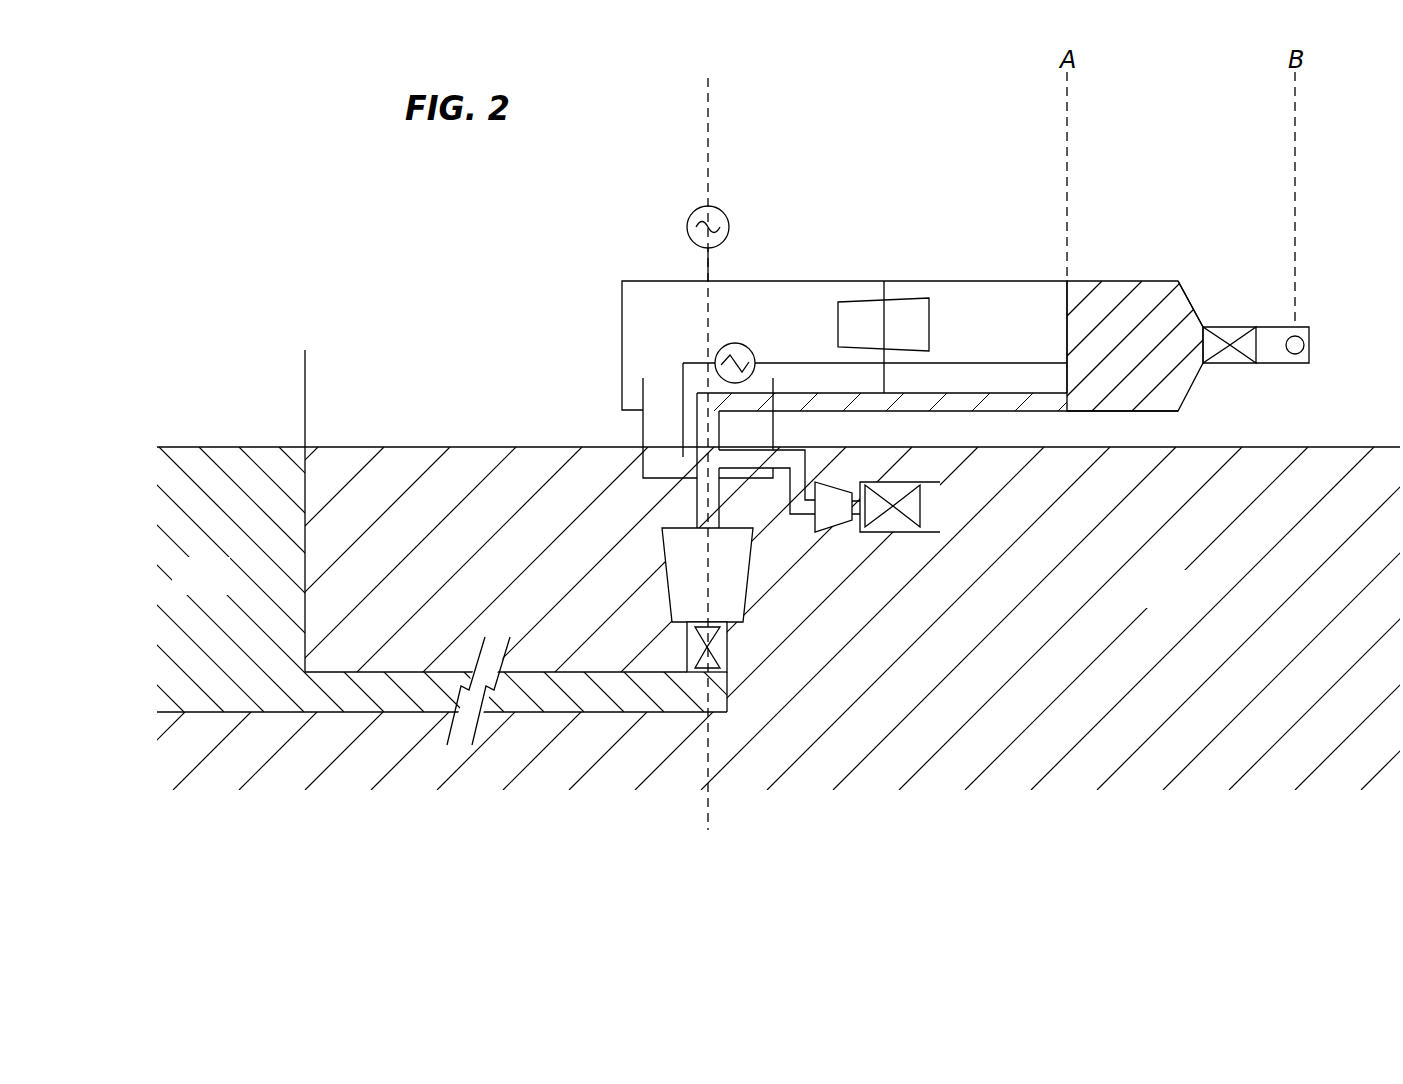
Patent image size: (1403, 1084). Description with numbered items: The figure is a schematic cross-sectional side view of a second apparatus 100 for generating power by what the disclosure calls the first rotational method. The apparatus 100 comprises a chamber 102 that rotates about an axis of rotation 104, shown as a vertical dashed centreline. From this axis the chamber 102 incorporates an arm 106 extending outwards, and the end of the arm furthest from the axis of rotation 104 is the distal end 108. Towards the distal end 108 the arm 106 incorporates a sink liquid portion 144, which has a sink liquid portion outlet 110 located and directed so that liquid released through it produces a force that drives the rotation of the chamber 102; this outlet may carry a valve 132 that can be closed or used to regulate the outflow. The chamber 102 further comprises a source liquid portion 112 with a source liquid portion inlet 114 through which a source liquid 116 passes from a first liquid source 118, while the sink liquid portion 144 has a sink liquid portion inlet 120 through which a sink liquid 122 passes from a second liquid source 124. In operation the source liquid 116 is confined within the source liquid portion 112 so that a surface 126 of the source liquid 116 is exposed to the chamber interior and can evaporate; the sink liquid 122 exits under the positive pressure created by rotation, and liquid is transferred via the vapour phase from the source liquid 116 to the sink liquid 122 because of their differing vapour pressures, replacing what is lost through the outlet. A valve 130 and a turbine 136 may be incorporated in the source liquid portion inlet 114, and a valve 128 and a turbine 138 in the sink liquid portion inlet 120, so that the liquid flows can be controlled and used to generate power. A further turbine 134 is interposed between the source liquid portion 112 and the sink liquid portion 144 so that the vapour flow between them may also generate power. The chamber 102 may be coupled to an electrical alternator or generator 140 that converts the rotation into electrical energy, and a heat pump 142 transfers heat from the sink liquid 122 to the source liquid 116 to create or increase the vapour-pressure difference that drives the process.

The apparatus 100 is at (956, 168).
The chamber 102 is at (846, 288).
The axis of rotation 104 is at (695, 155).
The arm 106 is at (995, 272).
The distal end 108 is at (1198, 290).
The sink liquid portion outlet 110 is at (1312, 322).
The source liquid portion 112 is at (638, 431).
The source liquid portion inlet 114 is at (690, 503).
The source liquid 116 is at (643, 461).
The first liquid source 118 is at (223, 584).
The sink liquid portion inlet 120 is at (968, 412).
The sink liquid 122 is at (1160, 390).
The second liquid source 124 is at (1185, 602).
The surface of the source liquid 126 is at (660, 447).
The valve 128 is at (897, 492).
The valve 130 is at (715, 640).
The valve 132 is at (1237, 355).
The turbine 134 is at (908, 300).
The turbine 136 is at (722, 575).
The turbine 138 is at (838, 525).
The electrical alternator or generator 140 is at (687, 227).
The heat pump 142 is at (735, 343).
The sink liquid portion 144 is at (1118, 280).